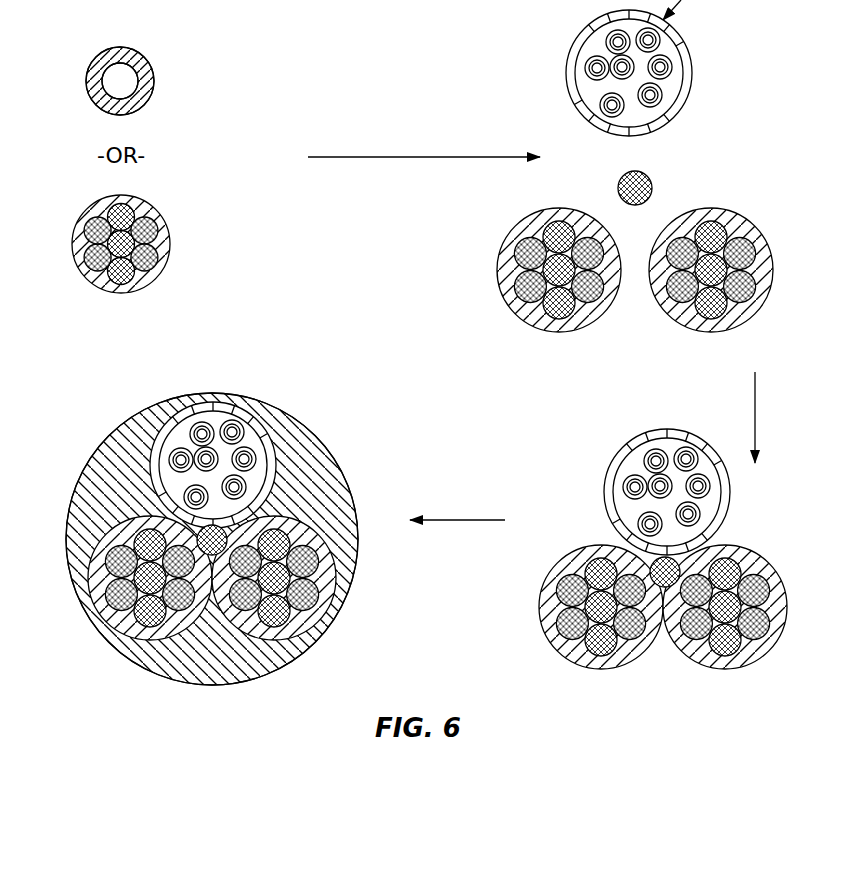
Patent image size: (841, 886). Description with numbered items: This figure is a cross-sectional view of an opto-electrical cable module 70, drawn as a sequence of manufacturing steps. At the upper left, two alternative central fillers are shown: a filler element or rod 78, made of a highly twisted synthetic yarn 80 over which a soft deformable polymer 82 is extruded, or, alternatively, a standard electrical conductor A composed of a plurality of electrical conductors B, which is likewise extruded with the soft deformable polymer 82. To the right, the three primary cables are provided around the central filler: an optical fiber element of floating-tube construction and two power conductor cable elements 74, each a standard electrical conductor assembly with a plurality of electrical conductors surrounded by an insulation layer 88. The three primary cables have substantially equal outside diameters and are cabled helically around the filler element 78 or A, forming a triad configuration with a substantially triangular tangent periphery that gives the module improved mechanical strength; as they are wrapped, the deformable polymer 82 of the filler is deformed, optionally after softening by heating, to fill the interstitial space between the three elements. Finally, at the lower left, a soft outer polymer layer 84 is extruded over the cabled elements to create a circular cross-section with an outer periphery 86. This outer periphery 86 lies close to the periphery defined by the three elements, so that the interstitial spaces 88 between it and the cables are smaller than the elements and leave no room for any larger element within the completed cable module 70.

The opto-electrical cable module 70 is at (239, 522).
The power conductor cable element 74 is at (689, 337).
The filler element or rod 78 is at (133, 46).
The highly twisted synthetic yarn 80 is at (127, 87).
The soft deformable polymer 82 is at (152, 72).
The outer polymer layer 84 is at (295, 439).
The outer periphery 86 is at (348, 479).
The insulation layer / interstitial spaces 88 is at (236, 668).
The standard electrical conductor A is at (149, 199).
The electrical conductor B is at (157, 260).